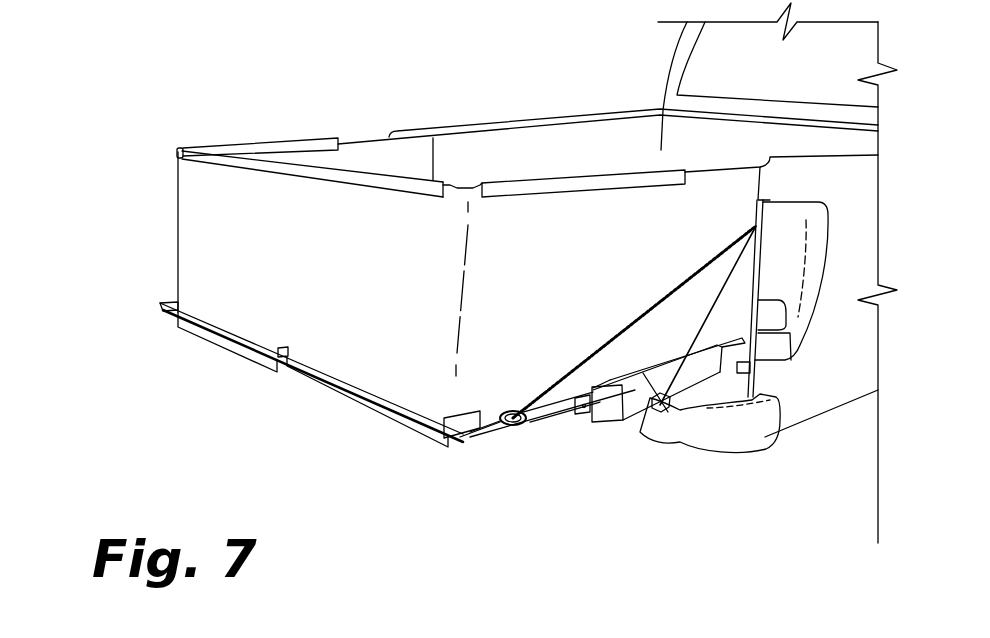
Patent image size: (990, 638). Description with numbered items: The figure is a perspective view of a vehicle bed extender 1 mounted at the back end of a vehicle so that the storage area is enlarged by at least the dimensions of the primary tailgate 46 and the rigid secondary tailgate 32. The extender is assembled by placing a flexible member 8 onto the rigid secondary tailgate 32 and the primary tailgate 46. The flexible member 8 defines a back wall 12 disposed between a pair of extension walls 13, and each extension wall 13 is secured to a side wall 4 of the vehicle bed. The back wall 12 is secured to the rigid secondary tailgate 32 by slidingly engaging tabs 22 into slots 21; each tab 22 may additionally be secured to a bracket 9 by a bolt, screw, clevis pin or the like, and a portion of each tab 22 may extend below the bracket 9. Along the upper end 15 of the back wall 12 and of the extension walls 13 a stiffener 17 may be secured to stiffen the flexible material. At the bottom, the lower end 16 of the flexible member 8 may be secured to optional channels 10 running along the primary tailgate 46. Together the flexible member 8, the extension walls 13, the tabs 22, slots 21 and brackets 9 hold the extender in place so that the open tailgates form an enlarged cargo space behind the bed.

The vehicle bed extender 1 is at (135, 157).
The side wall 4 is at (857, 215).
The flexible member 8 is at (178, 255).
The bracket 9 is at (440, 418).
The channel 10 is at (670, 412).
The back wall 12 is at (256, 218).
The extension wall 13 is at (313, 160).
The upper end 15 is at (472, 180).
The lower end 16 is at (473, 432).
The stiffener 17 is at (247, 150).
The slot 21 is at (182, 317).
The tab 22 is at (227, 343).
The rigid secondary tailgate 32 is at (555, 412).
The primary tailgate 46 is at (707, 382).